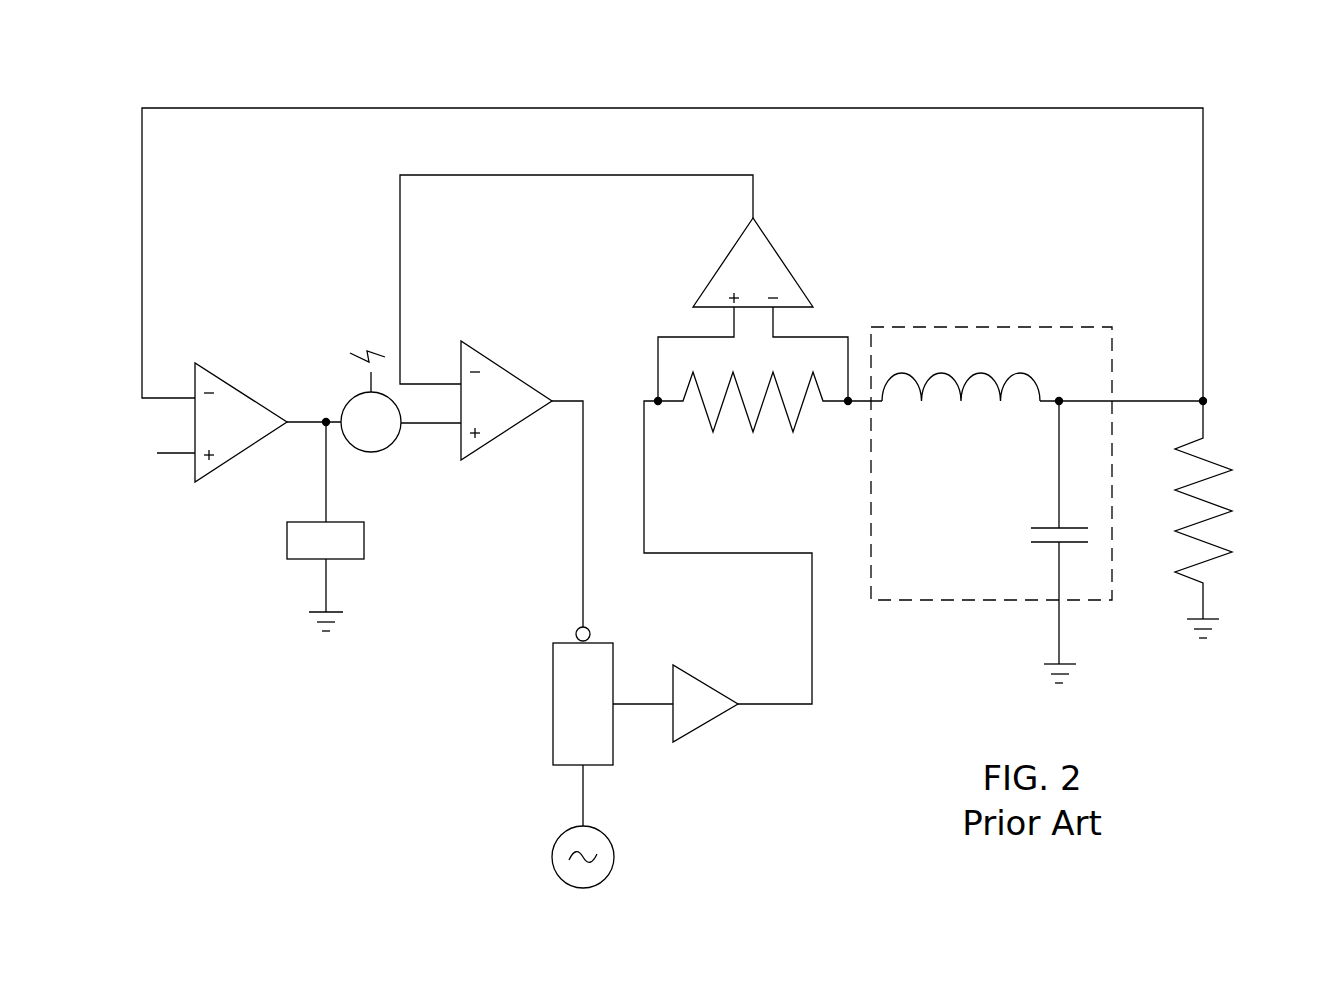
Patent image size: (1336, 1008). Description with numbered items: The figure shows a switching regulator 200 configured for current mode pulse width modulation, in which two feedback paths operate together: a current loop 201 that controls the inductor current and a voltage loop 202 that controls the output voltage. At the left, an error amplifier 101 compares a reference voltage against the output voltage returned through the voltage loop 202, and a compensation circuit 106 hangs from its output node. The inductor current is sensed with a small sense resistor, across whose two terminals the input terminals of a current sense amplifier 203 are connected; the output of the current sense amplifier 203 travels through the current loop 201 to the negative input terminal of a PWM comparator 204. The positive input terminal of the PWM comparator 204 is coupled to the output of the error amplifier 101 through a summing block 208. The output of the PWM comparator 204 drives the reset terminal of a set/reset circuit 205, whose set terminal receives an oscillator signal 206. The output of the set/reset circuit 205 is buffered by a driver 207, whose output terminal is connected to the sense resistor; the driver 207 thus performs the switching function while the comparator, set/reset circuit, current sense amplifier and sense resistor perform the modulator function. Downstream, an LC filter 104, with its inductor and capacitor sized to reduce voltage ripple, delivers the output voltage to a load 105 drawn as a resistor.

The switching regulator 200 is at (712, 464).
The error amplifier 101 is at (221, 422).
The LC filter 104 is at (1037, 505).
The load 105 is at (1249, 508).
The compensation circuit 106 is at (325, 526).
The current loop 201 is at (576, 279).
The voltage loop 202 is at (672, 254).
The current sense amplifier 203 is at (753, 311).
The PWM comparator 204 is at (522, 484).
The set/reset circuit 205 is at (587, 696).
The oscillator signal 206 is at (605, 826).
The driver 207 is at (728, 571).
The summing block 208 is at (401, 418).